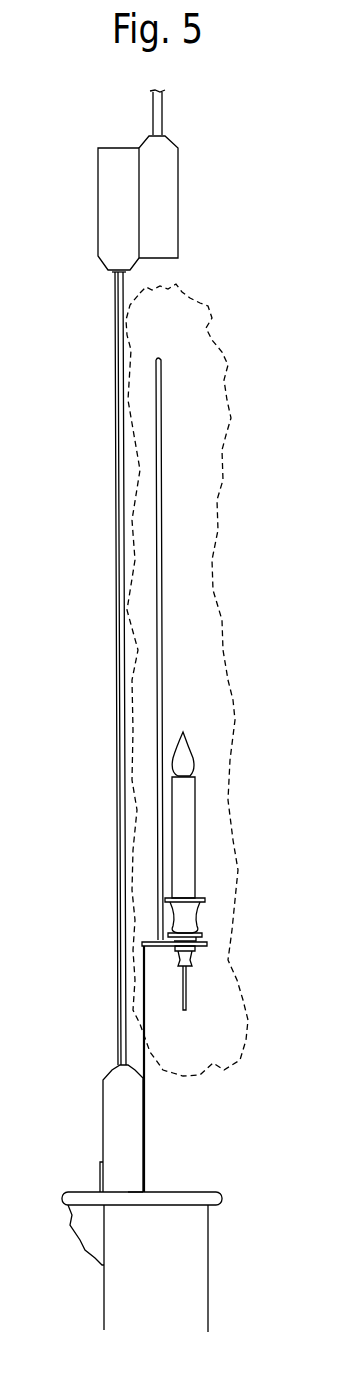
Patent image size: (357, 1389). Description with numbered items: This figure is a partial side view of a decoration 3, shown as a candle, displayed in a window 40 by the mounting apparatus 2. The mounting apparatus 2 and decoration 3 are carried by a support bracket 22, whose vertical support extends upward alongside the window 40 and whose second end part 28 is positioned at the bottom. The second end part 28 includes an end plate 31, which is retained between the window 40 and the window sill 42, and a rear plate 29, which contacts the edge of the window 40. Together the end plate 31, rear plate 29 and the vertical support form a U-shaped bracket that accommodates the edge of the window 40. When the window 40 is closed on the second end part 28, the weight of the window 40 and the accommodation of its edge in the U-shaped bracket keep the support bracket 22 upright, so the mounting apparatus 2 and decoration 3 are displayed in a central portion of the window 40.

The mounting apparatus 2 is at (210, 974).
The decoration 3 is at (199, 679).
The support bracket 22 is at (147, 1112).
The second end part 28 is at (118, 1192).
The rear plate 29 is at (100, 1175).
The end plate 31 is at (136, 1194).
The window 40 is at (116, 665).
The window sill 42 is at (193, 1188).